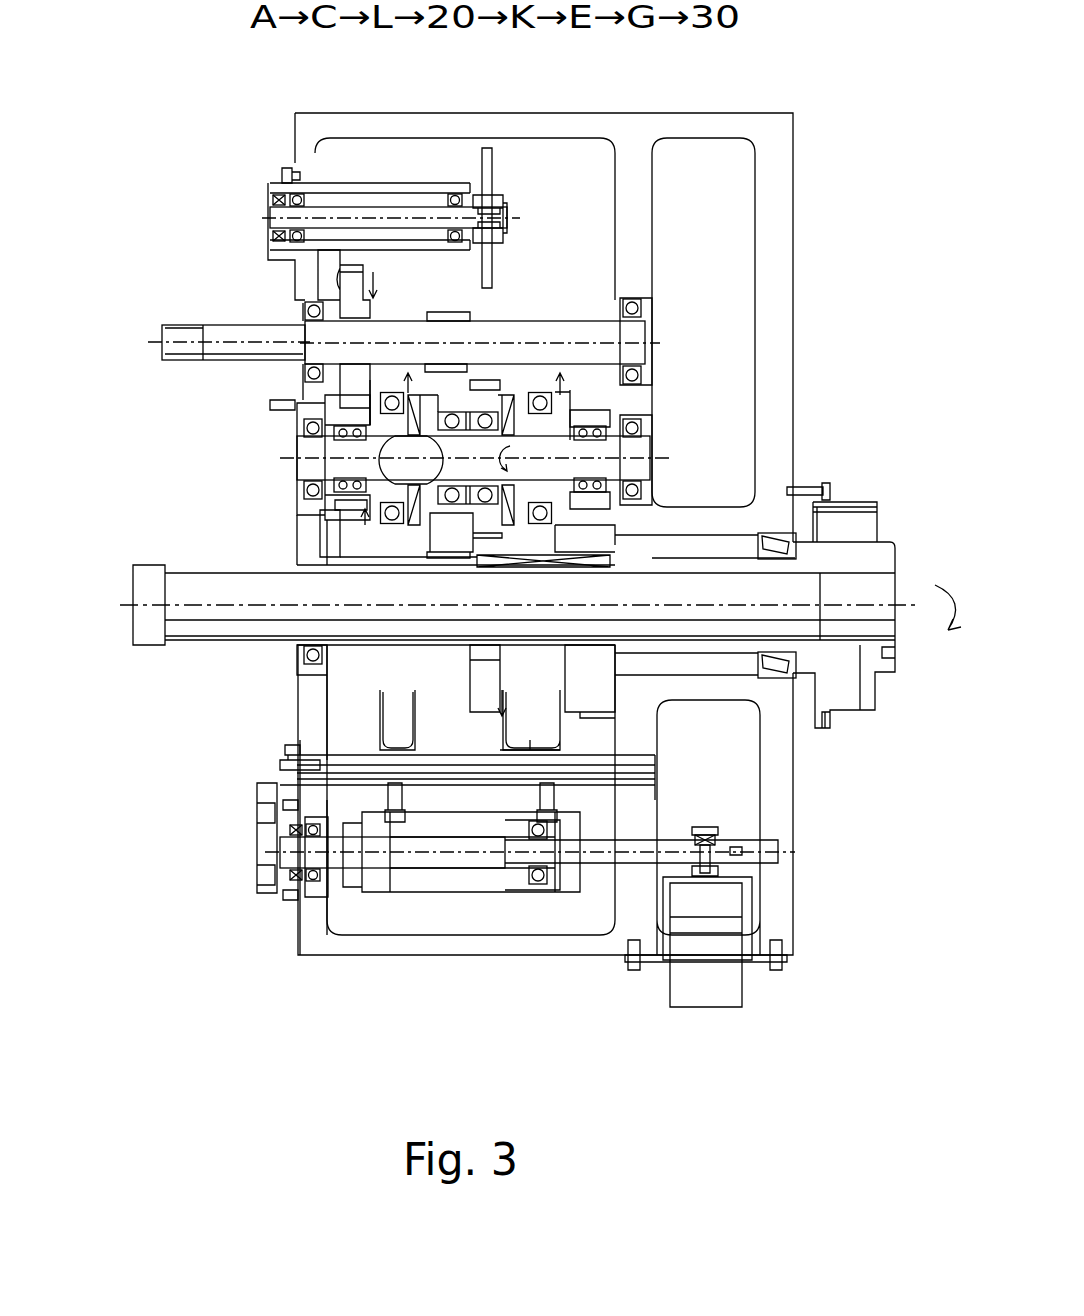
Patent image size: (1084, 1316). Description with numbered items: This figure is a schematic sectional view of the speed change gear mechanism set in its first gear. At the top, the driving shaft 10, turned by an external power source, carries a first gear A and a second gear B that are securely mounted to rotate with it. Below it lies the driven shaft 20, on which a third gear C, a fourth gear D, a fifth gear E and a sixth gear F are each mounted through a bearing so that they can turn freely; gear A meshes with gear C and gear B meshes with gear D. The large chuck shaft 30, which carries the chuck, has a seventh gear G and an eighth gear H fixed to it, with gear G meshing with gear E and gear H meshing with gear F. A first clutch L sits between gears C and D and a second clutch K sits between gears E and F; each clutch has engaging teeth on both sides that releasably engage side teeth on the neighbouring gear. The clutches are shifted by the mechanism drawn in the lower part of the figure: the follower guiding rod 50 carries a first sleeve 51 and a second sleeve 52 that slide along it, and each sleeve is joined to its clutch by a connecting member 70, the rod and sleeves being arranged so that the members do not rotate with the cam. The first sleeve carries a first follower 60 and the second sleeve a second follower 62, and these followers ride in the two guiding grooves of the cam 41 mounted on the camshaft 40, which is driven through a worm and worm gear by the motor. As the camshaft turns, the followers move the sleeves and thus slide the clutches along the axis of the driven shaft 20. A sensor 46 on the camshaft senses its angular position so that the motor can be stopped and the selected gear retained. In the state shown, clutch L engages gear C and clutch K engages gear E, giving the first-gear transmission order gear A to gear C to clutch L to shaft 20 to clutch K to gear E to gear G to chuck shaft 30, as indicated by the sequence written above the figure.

The driving shaft 10 is at (210, 333).
The driven shaft 20 is at (648, 447).
The chuck shaft 30 is at (182, 587).
The camshaft 40 is at (768, 852).
The cam 41 is at (435, 880).
The sensor 46 is at (736, 847).
The follower guiding rod 50 is at (315, 755).
The first sleeve 51 is at (398, 742).
The second sleeve 52 is at (540, 735).
The first follower 60 is at (397, 813).
The second follower 62 is at (557, 800).
The connecting member 70 is at (392, 700).
The first gear A is at (367, 267).
The second gear B is at (465, 311).
The third gear C is at (347, 412).
The fourth gear D is at (443, 533).
The fifth gear E is at (503, 387).
The sixth gear F is at (590, 410).
The seventh gear G is at (475, 678).
The eighth gear H is at (600, 697).
The second clutch K is at (650, 480).
The first clutch L is at (393, 507).